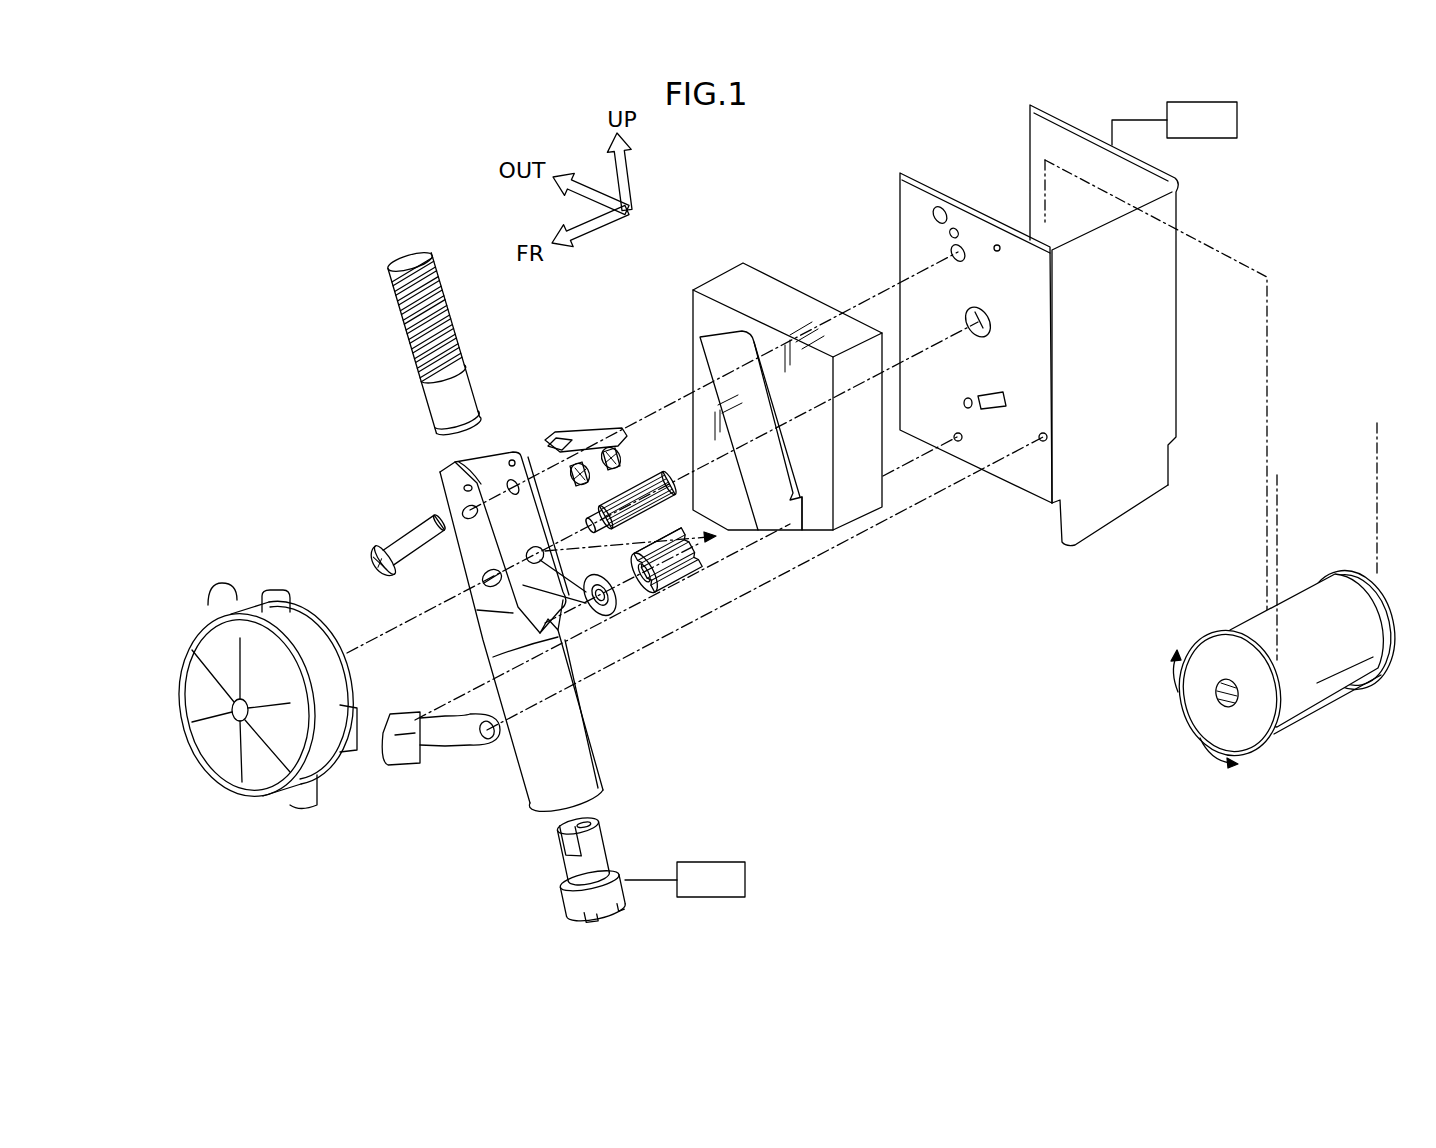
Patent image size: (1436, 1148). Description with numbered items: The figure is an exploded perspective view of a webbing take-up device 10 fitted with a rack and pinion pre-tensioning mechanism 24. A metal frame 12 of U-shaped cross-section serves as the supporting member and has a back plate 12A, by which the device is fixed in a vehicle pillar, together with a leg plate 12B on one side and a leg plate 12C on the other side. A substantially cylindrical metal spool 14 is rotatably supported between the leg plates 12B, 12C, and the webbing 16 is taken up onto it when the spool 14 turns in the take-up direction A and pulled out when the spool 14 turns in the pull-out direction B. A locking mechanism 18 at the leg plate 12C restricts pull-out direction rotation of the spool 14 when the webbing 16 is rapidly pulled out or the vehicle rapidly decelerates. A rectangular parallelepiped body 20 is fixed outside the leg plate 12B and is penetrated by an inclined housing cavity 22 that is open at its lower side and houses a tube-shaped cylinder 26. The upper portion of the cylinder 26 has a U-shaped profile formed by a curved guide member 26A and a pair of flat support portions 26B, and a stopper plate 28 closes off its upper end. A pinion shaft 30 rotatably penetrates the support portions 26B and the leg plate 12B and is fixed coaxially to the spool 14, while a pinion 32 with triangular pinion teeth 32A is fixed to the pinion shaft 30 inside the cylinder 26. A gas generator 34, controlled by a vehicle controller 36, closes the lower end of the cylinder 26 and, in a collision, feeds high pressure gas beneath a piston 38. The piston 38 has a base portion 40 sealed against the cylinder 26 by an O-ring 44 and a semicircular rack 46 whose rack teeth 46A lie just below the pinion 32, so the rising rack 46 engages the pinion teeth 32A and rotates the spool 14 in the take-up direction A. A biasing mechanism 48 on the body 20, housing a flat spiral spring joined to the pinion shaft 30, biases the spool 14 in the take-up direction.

The webbing take-up device 10 is at (756, 205).
The frame 12 is at (1070, 119).
The back plate 12A is at (1105, 532).
The leg plate 12B is at (898, 221).
The leg plate 12C is at (1028, 157).
The spool 14 is at (1328, 708).
The webbing 16 is at (1262, 636).
The locking mechanism 18 is at (1240, 122).
The body 20 is at (722, 285).
The housing cavity 22 is at (720, 357).
The pre-tensioning mechanism 24 is at (544, 392).
The cylinder 26 is at (592, 742).
The guide member 26A is at (440, 478).
The support portions 26B is at (513, 459).
The stopper plate 28 is at (595, 432).
The pinion shaft 30 is at (650, 478).
The pinion 32 is at (682, 600).
The pinion teeth 32A is at (697, 575).
The gas generator 34 is at (565, 870).
The controller 36 is at (712, 860).
The piston 38 is at (386, 266).
The base portion 40 is at (478, 396).
The O-ring 44 is at (438, 428).
The rack 46 is at (396, 326).
The rack teeth 46A is at (446, 293).
The biasing mechanism 48 is at (248, 594).
The take-up direction A is at (1165, 684).
The pull-out direction B is at (1203, 750).